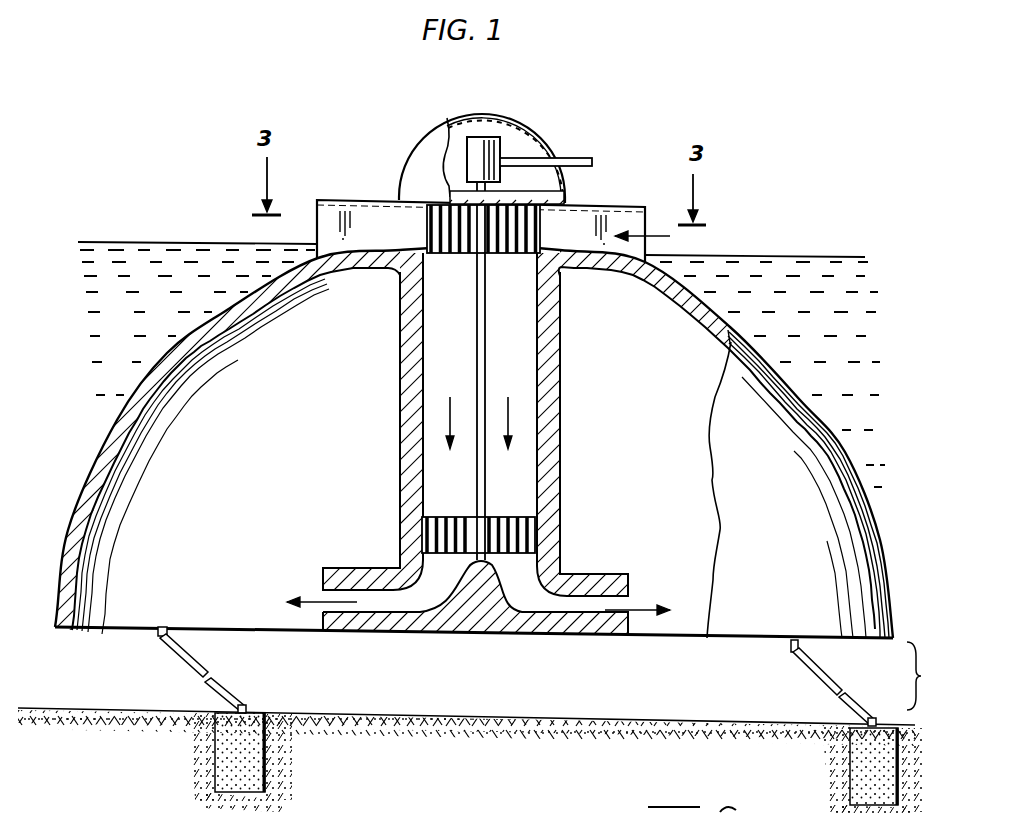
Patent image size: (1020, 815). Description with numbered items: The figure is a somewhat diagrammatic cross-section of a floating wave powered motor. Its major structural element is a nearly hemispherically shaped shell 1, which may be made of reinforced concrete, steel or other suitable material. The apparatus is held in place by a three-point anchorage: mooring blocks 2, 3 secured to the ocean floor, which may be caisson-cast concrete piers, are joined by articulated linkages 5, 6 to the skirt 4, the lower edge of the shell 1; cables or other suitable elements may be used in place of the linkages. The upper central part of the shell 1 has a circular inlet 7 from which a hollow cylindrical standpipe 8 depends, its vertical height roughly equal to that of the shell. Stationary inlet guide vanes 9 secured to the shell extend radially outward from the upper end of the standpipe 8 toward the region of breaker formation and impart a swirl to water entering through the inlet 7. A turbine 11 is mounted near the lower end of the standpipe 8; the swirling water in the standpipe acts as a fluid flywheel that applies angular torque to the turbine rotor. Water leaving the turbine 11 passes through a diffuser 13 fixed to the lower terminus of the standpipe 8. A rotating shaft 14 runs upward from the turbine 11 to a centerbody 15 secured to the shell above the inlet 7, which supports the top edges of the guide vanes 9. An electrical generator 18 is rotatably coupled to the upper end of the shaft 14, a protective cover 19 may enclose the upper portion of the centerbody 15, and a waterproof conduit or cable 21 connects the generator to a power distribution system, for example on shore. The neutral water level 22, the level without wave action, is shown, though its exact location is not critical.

The shell 1 is at (890, 547).
The mooring block 2 is at (258, 714).
The mooring block 3 is at (860, 727).
The skirt 4 is at (680, 640).
The articulated linkage 5 is at (220, 680).
The articulated linkage 6 is at (806, 668).
The circular inlet 7 is at (546, 292).
The standpipe 8 is at (560, 371).
The inlet guide vanes 9 is at (342, 207).
The turbine 11 is at (533, 538).
The diffuser 13 is at (608, 600).
The rotating shaft 14 is at (487, 490).
The centerbody 15 is at (410, 200).
The electrical generator 18 is at (473, 148).
The protective cover 19 is at (441, 134).
The waterproof conduit or cable 21 is at (574, 158).
The neutral water level 22 is at (782, 257).